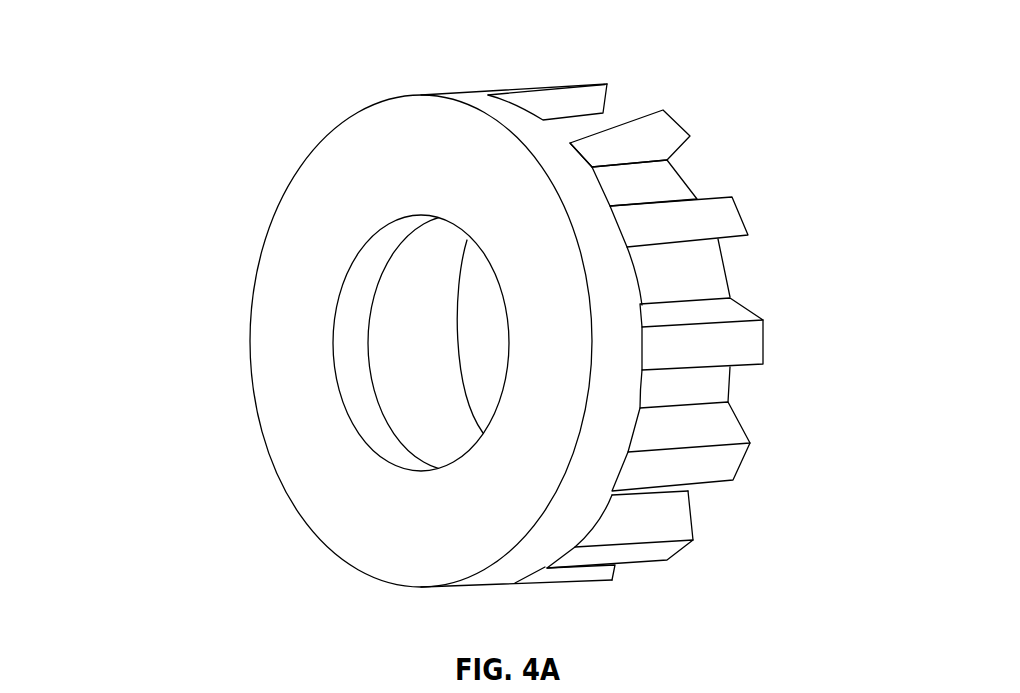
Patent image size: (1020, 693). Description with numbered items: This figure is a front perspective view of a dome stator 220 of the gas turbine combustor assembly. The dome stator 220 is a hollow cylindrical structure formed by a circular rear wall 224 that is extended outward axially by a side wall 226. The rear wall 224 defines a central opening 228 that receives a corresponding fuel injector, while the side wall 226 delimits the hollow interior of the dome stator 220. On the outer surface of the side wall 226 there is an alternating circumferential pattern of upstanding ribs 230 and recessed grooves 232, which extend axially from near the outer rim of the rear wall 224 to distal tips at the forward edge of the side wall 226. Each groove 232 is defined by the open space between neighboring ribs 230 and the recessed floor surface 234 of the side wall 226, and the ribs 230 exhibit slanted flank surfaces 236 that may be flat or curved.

The dome stator 220 is at (246, 92).
The rear wall 224 is at (425, 166).
The side wall 226 is at (445, 354).
The central opening 228 is at (342, 395).
The upstanding ribs 230 is at (642, 126).
The recessed grooves 232 is at (722, 187).
The recessed floor surface 234 is at (662, 198).
The slanted flank surfaces 236 is at (668, 147).